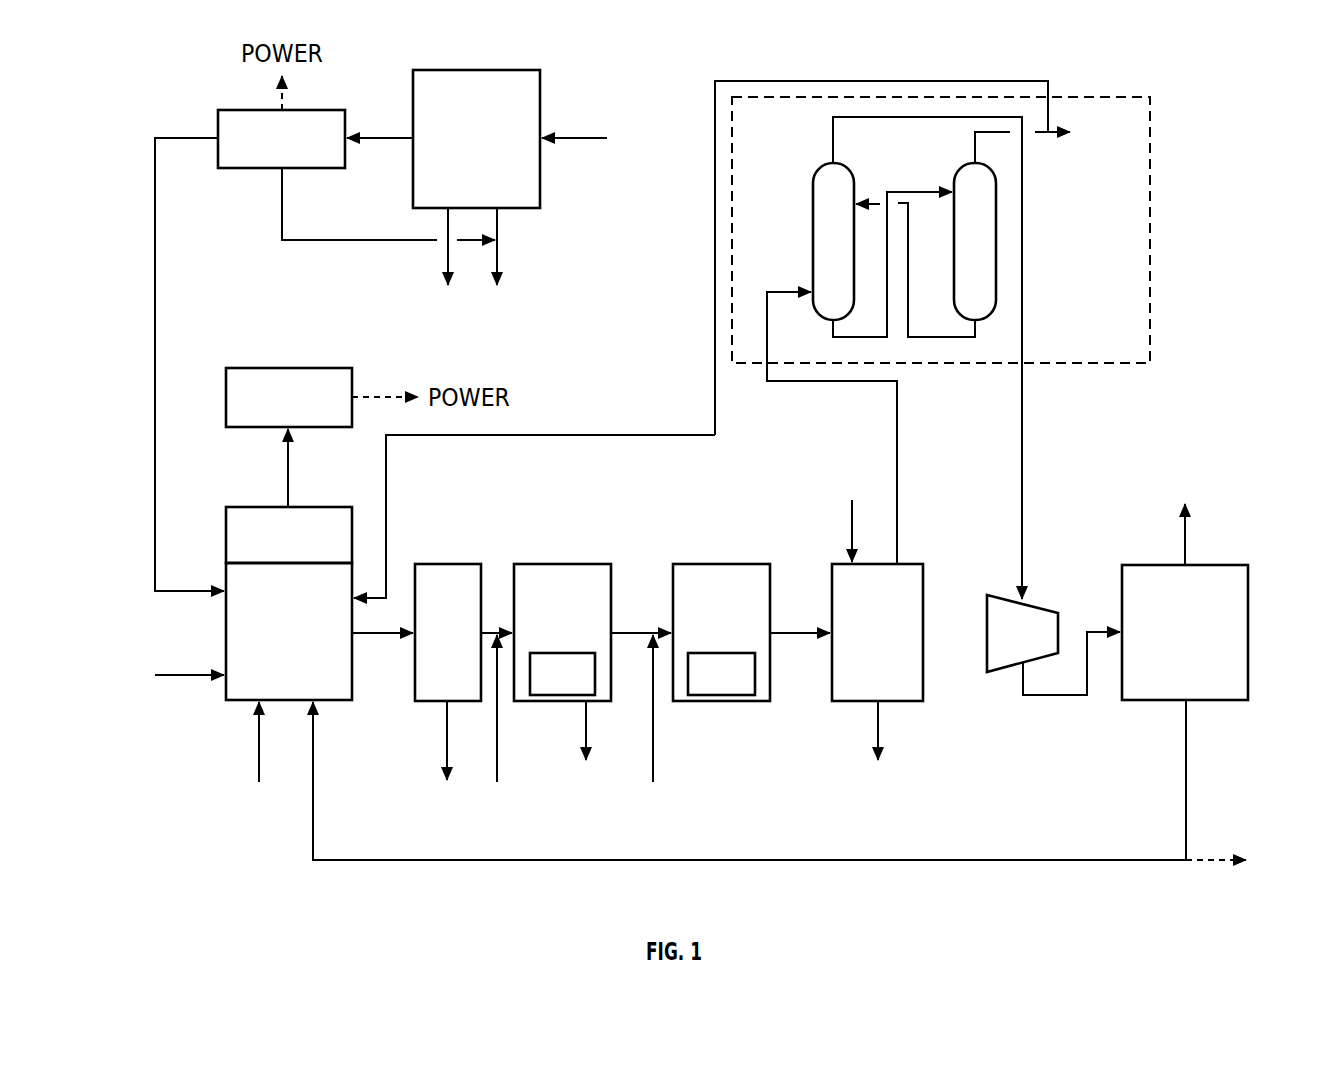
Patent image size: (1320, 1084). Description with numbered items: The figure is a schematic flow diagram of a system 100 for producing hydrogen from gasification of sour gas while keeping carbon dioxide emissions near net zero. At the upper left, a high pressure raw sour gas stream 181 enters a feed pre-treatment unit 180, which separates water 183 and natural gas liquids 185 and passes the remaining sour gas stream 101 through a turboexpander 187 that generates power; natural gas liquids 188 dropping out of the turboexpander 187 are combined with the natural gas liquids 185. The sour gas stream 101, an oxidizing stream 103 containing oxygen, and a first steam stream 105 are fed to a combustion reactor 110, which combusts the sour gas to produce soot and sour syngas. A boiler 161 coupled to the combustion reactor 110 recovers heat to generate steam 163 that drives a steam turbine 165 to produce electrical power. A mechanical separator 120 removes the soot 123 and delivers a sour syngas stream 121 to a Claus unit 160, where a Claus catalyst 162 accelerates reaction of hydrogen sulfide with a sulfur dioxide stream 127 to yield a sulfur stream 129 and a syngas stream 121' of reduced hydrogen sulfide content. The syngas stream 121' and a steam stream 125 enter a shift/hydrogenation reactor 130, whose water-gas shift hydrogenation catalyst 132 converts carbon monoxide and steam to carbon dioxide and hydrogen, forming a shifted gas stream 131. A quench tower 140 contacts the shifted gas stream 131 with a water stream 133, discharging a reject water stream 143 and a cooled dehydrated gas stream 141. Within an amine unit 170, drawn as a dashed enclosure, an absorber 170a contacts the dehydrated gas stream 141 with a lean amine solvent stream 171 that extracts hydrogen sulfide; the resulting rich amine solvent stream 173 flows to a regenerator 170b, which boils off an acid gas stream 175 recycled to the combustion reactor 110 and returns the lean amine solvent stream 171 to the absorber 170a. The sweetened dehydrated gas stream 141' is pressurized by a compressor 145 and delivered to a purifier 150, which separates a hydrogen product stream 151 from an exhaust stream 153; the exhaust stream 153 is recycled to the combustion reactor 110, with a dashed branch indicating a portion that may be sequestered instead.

The system 100 is at (657, 914).
The sour gas stream 101 is at (368, 137).
The oxidizing stream 103 is at (168, 673).
The first steam stream 105 is at (258, 732).
The combustion reactor 110 is at (271, 647).
The mechanical separator 120 is at (430, 647).
The sour syngas stream 121 is at (503, 581).
The syngas stream 121' is at (641, 598).
The soot 123 is at (447, 732).
The steam stream 125 is at (653, 730).
The sulfur dioxide stream 127 is at (497, 760).
The sulfur stream 129 is at (586, 752).
The shift/hydrogenation reactor 130 is at (703, 647).
The shifted gas stream 131 is at (778, 630).
The water-gas shift hydrogenation catalyst 132 is at (703, 687).
The water stream 133 is at (852, 513).
The quench tower 140 is at (859, 647).
The dehydrated gas stream 141 is at (832, 428).
The dehydrated gas stream (sweetened) 141' is at (928, 358).
The reject water stream 143 is at (878, 752).
The compressor 145 is at (1004, 647).
The purifier 150 is at (1167, 647).
The hydrogen product stream 151 is at (1185, 520).
The exhaust stream 153 is at (1186, 732).
The Claus unit 160 is at (544, 647).
The boiler 161 is at (271, 553).
The Claus catalyst 162 is at (544, 687).
The steam 163 is at (288, 487).
The steam turbine 165 is at (271, 412).
The amine unit 170 is at (1107, 357).
The absorber 170a is at (812, 197).
The regenerator 170b is at (997, 198).
The lean amine solvent stream 171 is at (948, 336).
The rich amine solvent stream 173 is at (923, 191).
The acid gas stream 175 is at (913, 258).
The feed pre-treatment unit 180 is at (459, 157).
The high pressure raw sour gas stream 181 is at (563, 137).
The water 183 is at (448, 263).
The natural gas liquids 185 is at (498, 267).
The turboexpander 187 is at (264, 157).
The natural gas liquids 188 is at (280, 203).